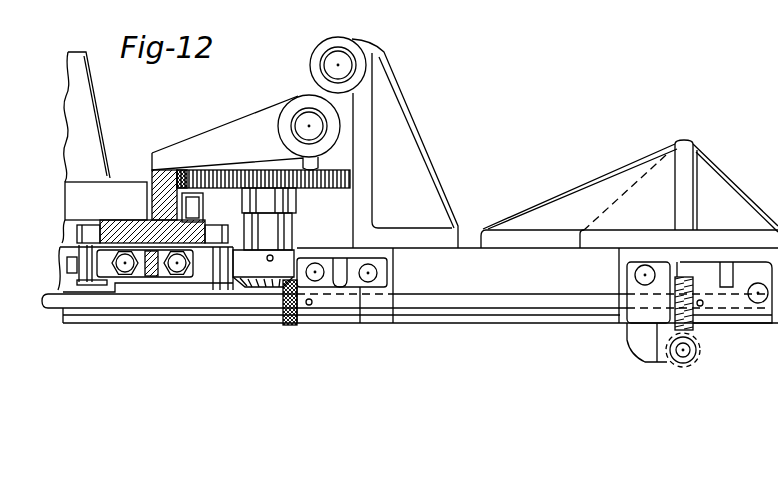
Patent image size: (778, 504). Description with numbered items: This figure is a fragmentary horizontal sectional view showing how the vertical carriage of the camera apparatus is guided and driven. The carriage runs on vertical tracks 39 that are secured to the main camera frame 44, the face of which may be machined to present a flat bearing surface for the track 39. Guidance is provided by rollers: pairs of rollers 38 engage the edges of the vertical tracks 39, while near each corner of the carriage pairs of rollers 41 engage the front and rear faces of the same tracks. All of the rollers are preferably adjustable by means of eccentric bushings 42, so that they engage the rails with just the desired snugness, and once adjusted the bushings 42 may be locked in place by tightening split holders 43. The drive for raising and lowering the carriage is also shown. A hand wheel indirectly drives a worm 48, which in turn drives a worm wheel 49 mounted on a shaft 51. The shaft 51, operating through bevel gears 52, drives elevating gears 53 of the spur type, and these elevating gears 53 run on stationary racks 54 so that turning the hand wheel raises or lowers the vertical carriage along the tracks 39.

The rollers 38 is at (77, 232).
The vertical tracks 39 is at (121, 223).
The rollers 41 is at (203, 203).
The eccentric bushings 42 is at (88, 290).
The split holders 43 is at (67, 273).
The main camera frame 44 is at (149, 176).
The worm 48 is at (703, 357).
The worm wheel 49 is at (693, 328).
The shaft 51 is at (505, 300).
The bevel gears 52 is at (293, 325).
The elevating gears 53 is at (347, 182).
The stationary racks 54 is at (183, 170).